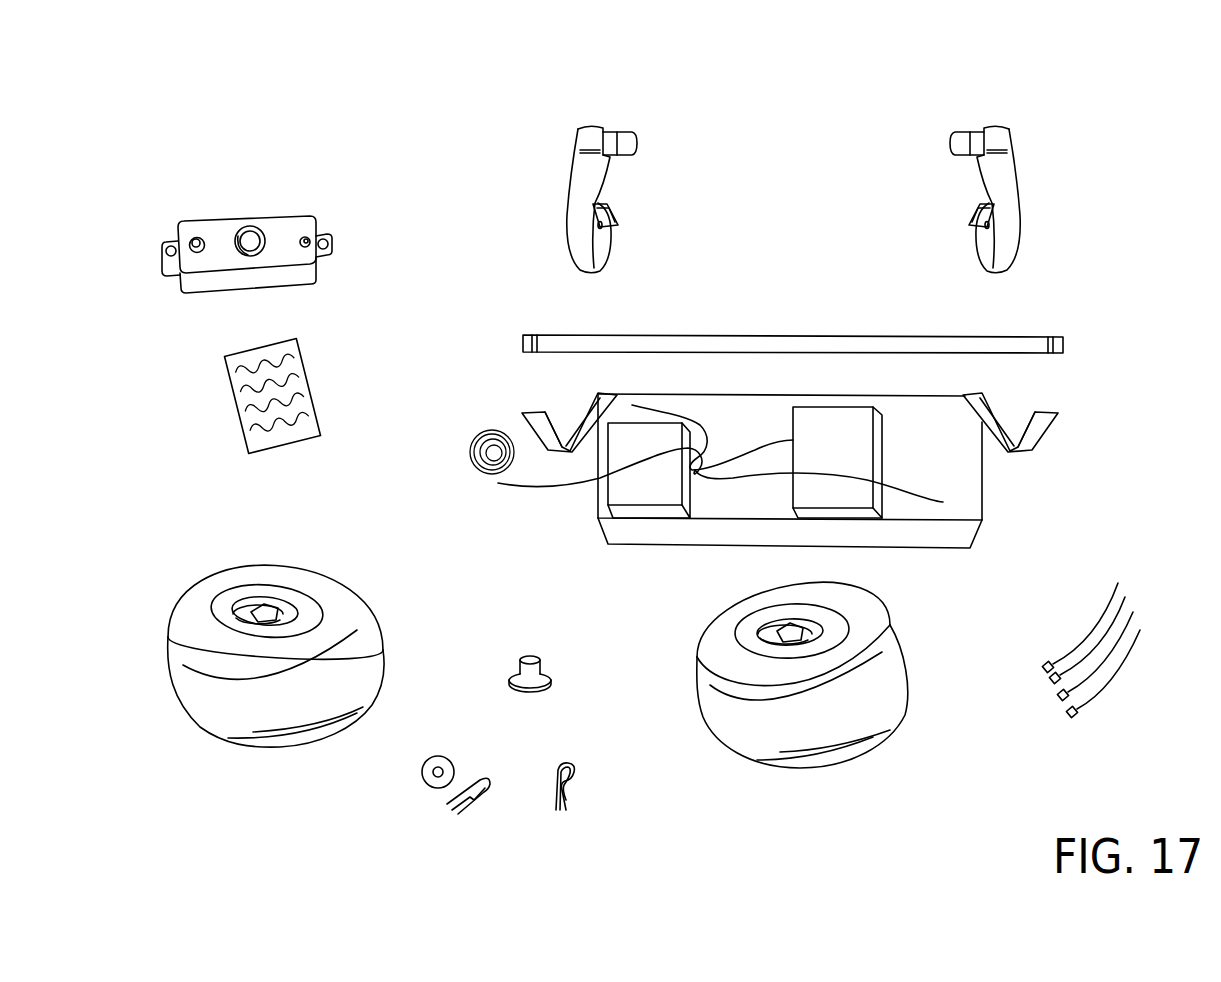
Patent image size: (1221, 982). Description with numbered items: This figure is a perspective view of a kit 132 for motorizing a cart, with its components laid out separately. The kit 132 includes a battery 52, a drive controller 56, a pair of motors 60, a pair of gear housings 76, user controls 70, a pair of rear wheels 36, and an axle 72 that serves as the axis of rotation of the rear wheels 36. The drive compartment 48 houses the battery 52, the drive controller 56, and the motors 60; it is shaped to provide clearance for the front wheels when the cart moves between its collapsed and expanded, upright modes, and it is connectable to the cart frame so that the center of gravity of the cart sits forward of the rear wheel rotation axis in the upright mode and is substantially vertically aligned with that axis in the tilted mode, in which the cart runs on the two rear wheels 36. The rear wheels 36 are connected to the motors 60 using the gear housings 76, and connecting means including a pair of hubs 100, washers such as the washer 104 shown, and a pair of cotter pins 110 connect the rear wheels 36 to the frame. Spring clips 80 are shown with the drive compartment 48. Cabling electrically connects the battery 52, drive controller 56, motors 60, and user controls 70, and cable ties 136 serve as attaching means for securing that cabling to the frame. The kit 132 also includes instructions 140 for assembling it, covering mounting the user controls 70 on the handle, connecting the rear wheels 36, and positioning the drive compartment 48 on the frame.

The kit 132 is at (400, 106).
The user controls 70 is at (235, 220).
The motors 60 is at (631, 132).
The gear housings 76 is at (577, 165).
The axle 72 is at (522, 343).
The spring clip 80 is at (590, 412).
The drive compartment 48 is at (984, 497).
The battery 52 is at (692, 500).
The drive controller 56 is at (881, 441).
The instructions 140 is at (227, 394).
The rear wheels 36 is at (274, 564).
The hubs 100 is at (526, 660).
The washer 104 is at (424, 782).
The cotter pins 110 is at (576, 791).
The cable ties 136 is at (1092, 630).